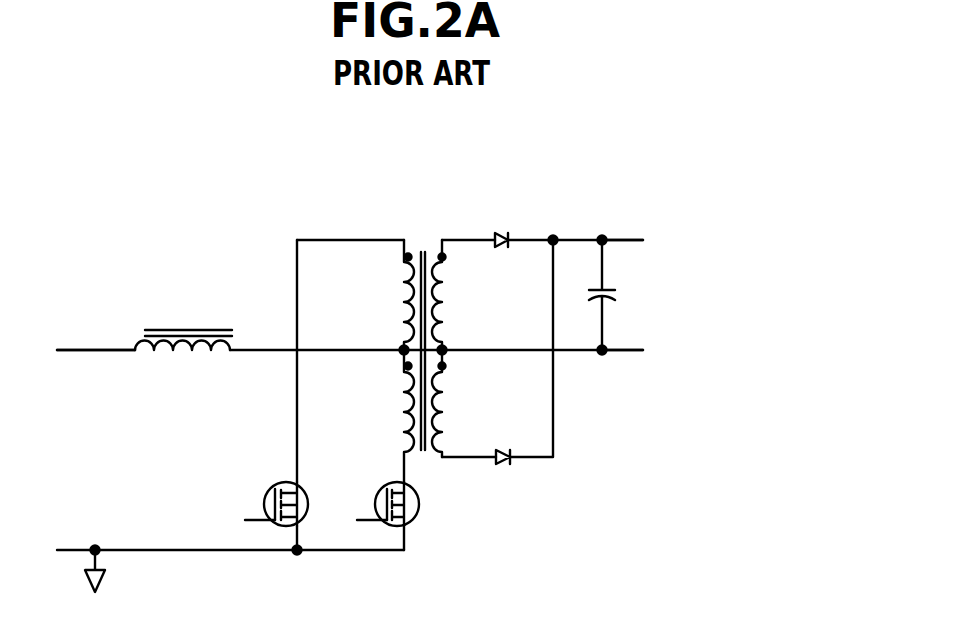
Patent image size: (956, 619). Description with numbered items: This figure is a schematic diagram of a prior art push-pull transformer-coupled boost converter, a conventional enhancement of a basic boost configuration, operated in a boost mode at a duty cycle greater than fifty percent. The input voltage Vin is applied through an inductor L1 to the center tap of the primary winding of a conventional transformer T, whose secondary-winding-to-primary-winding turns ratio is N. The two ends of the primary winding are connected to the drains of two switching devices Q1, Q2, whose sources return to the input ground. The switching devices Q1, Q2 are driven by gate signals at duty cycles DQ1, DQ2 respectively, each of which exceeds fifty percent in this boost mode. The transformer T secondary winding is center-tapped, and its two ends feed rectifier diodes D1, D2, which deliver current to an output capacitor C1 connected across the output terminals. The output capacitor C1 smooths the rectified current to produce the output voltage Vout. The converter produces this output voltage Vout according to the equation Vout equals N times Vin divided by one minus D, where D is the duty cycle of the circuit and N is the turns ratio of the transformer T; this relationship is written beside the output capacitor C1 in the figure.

The input inductor L1 is at (183, 322).
The transformer T is at (424, 339).
The rectifier diode D1 is at (499, 222).
The rectifier diode D2 is at (505, 477).
The output capacitor C1 is at (616, 295).
The switching device Q1 is at (410, 517).
The switching device Q2 is at (301, 517).
The duty cycle DQ1 is at (351, 503).
The duty cycle DQ2 is at (225, 518).
The input voltage Vin is at (86, 410).
The output voltage Vout is at (847, 293).